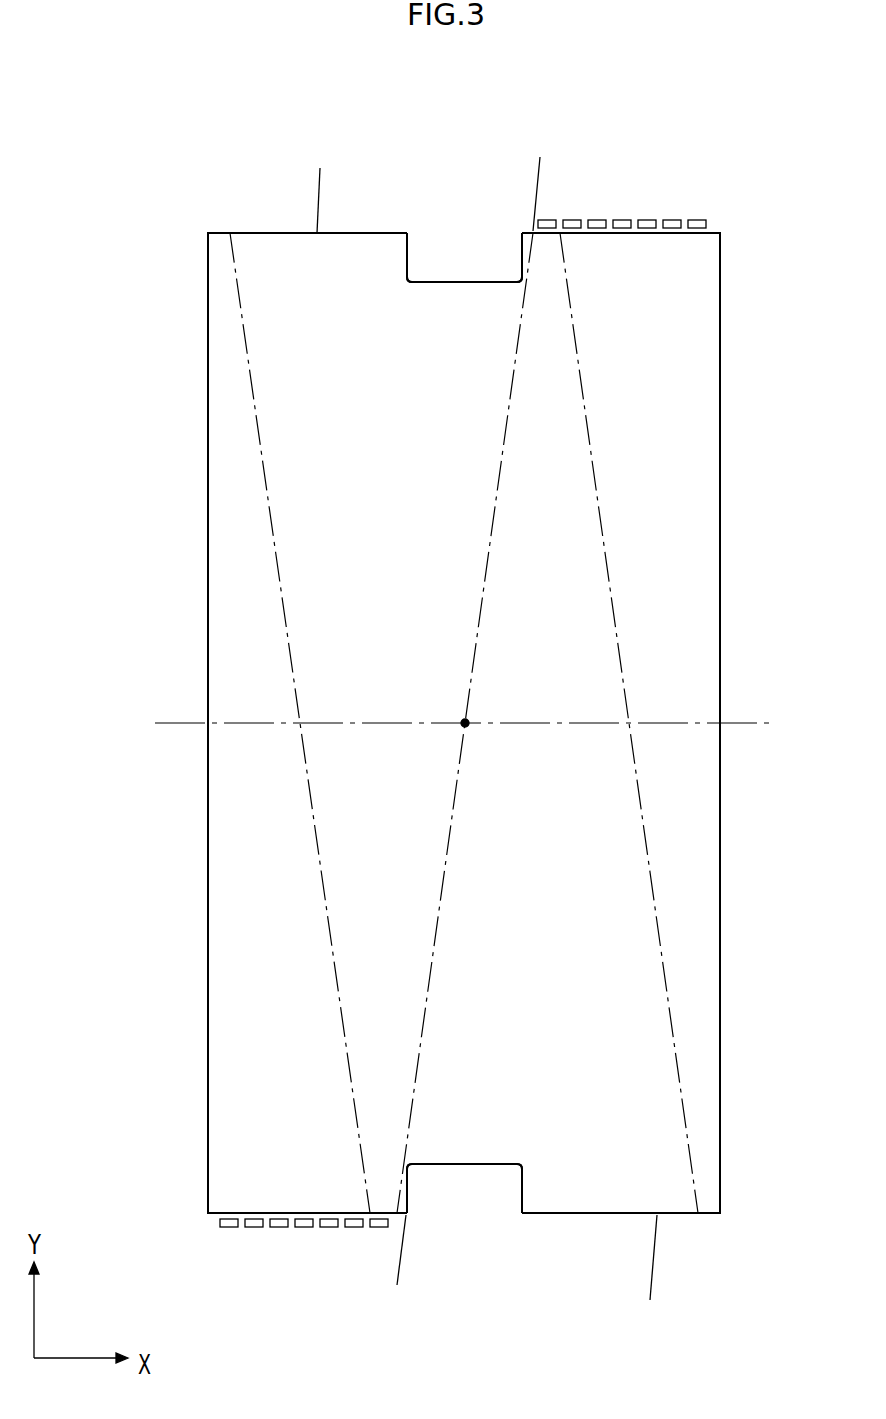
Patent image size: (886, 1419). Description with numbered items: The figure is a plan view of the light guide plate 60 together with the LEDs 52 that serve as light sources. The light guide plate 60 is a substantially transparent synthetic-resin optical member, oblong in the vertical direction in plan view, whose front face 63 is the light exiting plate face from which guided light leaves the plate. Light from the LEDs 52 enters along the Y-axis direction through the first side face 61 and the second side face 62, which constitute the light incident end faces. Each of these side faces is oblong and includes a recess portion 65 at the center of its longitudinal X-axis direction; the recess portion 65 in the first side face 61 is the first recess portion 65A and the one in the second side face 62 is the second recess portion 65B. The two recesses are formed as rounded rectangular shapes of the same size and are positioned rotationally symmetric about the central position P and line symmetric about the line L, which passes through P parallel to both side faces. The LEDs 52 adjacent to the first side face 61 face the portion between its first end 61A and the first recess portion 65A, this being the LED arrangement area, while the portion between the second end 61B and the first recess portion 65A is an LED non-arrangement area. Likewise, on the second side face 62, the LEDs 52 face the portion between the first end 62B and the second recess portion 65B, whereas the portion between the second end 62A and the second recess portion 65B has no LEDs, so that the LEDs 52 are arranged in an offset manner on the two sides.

The light guide plate 60 is at (475, 709).
The first side face 61 is at (560, 1214).
The first end of the first side face 61A is at (208, 1214).
The second end of the first side face 61B is at (720, 1214).
The second side face 62 is at (378, 232).
The second end of the second side face 62A is at (208, 232).
The first end of the second side face 62B is at (720, 232).
The front face 63 is at (703, 605).
The recess portion 65 is at (464, 766).
The first recess portion 65A is at (465, 1167).
The second recess portion 65B is at (472, 279).
The LEDs 52 is at (650, 223).